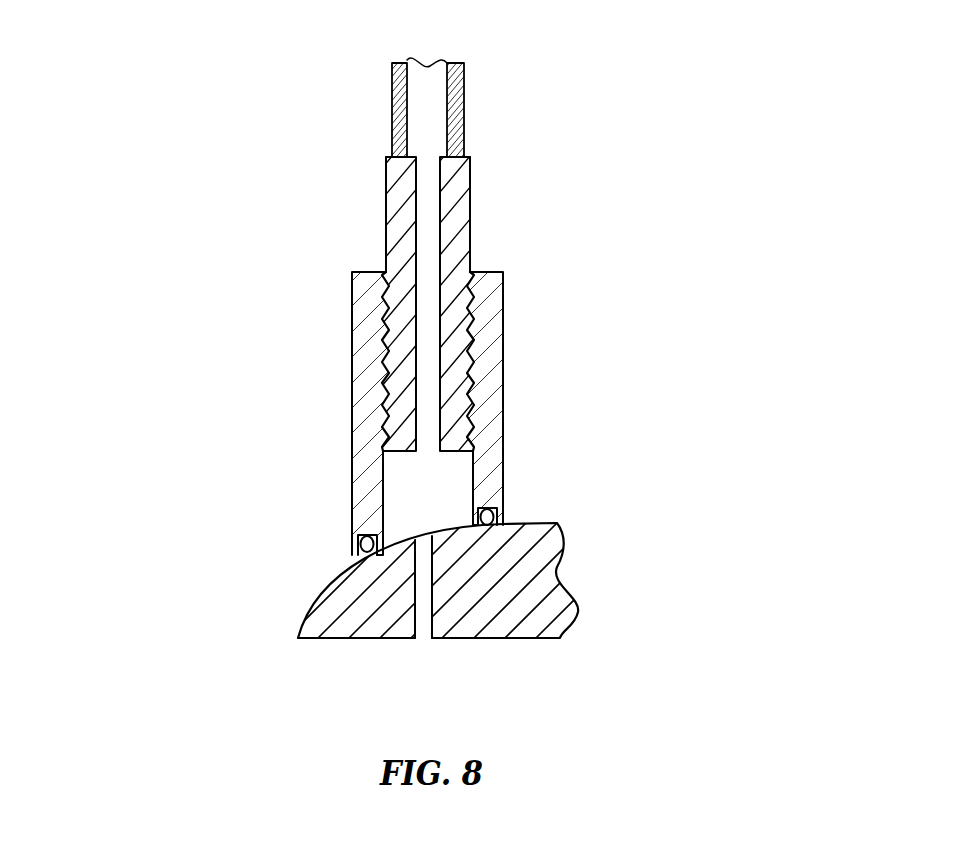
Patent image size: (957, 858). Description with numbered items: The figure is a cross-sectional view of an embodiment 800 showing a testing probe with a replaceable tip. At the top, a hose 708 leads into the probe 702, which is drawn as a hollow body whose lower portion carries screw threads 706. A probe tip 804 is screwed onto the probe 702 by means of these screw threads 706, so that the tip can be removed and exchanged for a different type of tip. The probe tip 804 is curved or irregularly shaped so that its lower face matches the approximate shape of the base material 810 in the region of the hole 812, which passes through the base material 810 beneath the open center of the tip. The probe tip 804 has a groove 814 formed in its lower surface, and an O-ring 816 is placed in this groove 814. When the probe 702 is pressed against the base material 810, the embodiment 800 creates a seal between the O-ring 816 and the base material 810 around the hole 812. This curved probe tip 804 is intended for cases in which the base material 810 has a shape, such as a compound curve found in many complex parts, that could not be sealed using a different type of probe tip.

The embodiment 800 is at (260, 149).
The hose 708 is at (464, 107).
The probe 702 is at (423, 305).
The screw threads 706 is at (474, 315).
The probe tip 804 is at (421, 415).
The groove 814 is at (367, 533).
The O-ring 816 is at (360, 543).
The base material 810 is at (498, 597).
The hole 812 is at (423, 625).